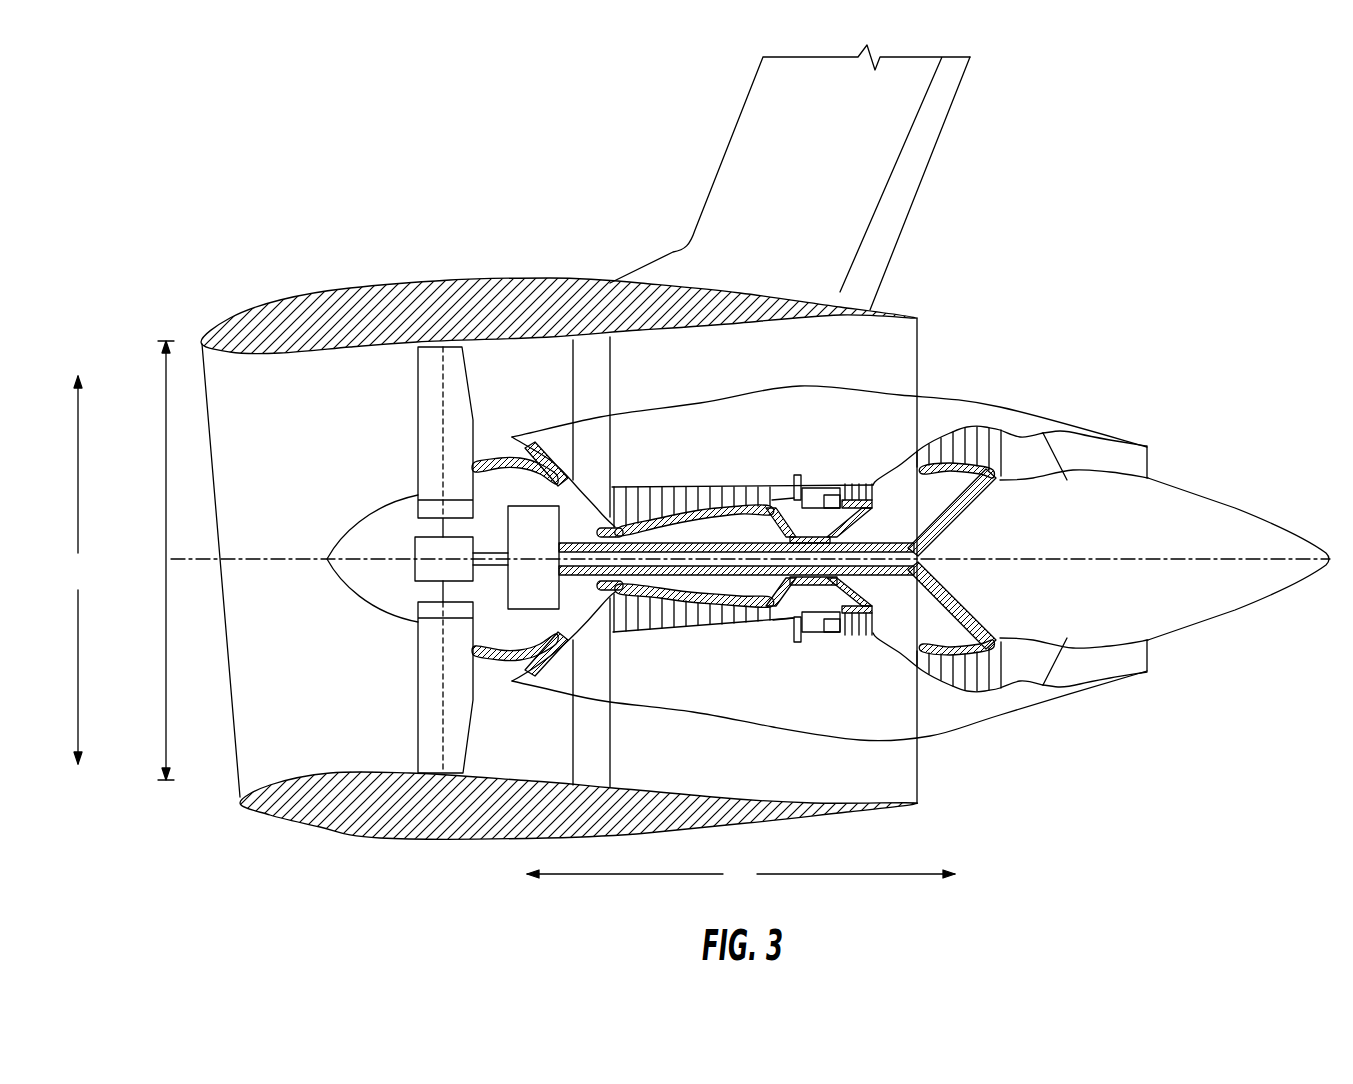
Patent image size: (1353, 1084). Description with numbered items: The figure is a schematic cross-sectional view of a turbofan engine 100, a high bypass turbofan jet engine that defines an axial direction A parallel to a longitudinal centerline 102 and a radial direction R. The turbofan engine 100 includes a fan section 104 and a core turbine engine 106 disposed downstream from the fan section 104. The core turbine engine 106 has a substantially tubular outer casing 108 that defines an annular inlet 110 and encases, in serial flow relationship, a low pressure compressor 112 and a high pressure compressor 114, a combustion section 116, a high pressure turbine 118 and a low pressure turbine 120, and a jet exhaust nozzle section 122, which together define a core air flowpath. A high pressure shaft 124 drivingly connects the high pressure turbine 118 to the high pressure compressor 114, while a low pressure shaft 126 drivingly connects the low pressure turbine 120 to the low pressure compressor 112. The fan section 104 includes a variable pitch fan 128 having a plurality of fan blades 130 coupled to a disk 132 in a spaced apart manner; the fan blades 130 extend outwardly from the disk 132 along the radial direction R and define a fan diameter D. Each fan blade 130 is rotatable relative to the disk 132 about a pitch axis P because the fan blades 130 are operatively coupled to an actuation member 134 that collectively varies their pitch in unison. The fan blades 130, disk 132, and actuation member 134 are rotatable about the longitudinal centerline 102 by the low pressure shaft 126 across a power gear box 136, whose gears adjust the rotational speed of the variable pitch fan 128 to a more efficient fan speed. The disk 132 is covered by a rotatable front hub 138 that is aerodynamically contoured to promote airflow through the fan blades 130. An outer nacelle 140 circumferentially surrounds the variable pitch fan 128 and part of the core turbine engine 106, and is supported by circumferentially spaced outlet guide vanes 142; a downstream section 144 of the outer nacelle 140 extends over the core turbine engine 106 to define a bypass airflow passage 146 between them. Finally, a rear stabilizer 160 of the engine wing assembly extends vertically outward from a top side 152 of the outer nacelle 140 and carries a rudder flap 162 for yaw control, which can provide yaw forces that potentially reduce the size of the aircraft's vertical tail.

The turbofan engine 100 is at (1182, 283).
The longitudinal centerline 102 is at (1088, 556).
The fan section 104 is at (373, 362).
The core turbine engine 106 is at (715, 362).
The outer casing 108 is at (772, 732).
The annular inlet 110 is at (502, 672).
The low pressure compressor 112 is at (572, 641).
The high pressure compressor 114 is at (640, 627).
The combustion section 116 is at (821, 632).
The high pressure turbine 118 is at (978, 624).
The low pressure turbine 120 is at (1005, 700).
The jet exhaust nozzle section 122 is at (1073, 682).
The high pressure shaft 124 is at (815, 530).
The low pressure shaft 126 is at (957, 510).
The variable pitch fan 128 is at (330, 577).
The fan blades 130 is at (413, 713).
The disk 132 is at (432, 510).
The actuation member 134 is at (413, 548).
The power gear box 136 is at (543, 520).
The front hub 138 is at (372, 619).
The outer nacelle 140 is at (460, 838).
The outlet guide vanes 142 is at (615, 370).
The downstream section 144 is at (841, 291).
The bypass airflow passage 146 is at (833, 367).
The top side 152 is at (460, 278).
The rear stabilizer 160 is at (792, 128).
The rudder flap 162 is at (942, 133).
The fan diameter D is at (164, 480).
The radial direction R is at (79, 570).
The axial direction A is at (741, 874).
The pitch axis P is at (463, 357).